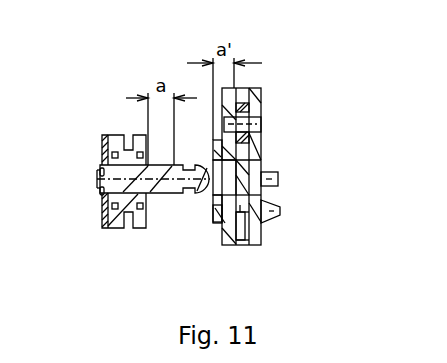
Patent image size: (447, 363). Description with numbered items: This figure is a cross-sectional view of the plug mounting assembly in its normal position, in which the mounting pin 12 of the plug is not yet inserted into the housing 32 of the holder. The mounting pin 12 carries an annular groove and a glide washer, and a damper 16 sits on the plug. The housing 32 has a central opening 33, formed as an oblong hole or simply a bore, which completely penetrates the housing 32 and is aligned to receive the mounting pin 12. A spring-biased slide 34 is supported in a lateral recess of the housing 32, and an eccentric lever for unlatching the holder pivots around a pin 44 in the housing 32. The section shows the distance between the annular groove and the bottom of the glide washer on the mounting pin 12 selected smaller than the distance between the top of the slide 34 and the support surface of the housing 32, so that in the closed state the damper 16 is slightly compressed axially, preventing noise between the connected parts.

The mounting pin 12 is at (163, 193).
The damper 16 is at (141, 166).
The housing 32 is at (251, 90).
The central opening 33 is at (223, 177).
The slide 34 is at (243, 222).
The pin 44 is at (252, 123).